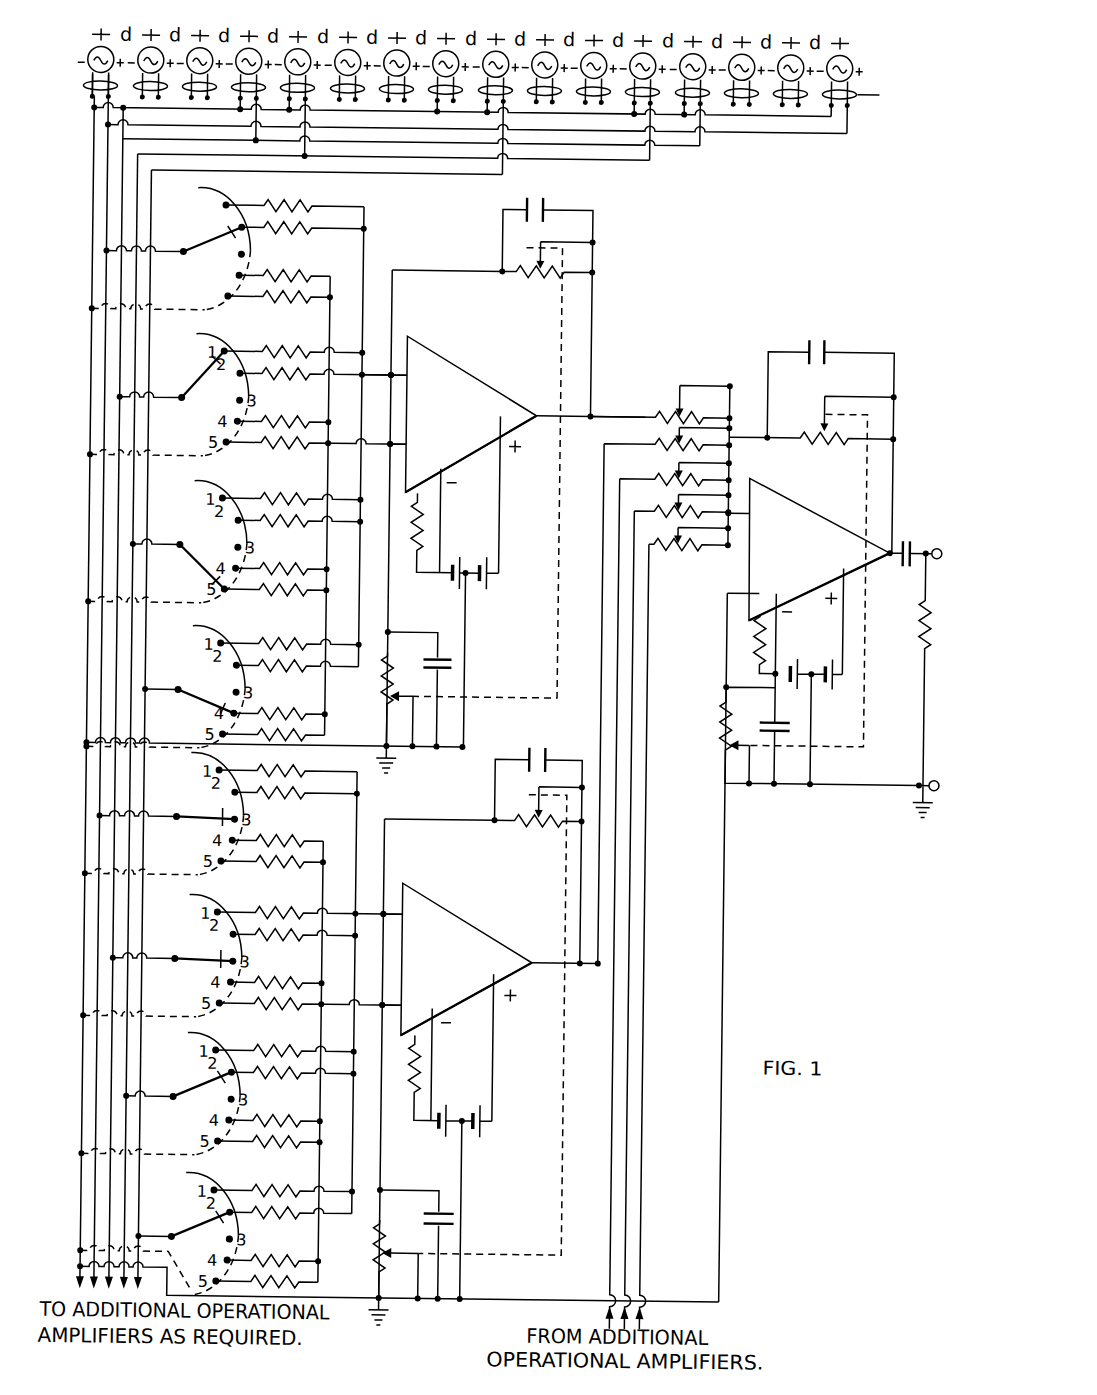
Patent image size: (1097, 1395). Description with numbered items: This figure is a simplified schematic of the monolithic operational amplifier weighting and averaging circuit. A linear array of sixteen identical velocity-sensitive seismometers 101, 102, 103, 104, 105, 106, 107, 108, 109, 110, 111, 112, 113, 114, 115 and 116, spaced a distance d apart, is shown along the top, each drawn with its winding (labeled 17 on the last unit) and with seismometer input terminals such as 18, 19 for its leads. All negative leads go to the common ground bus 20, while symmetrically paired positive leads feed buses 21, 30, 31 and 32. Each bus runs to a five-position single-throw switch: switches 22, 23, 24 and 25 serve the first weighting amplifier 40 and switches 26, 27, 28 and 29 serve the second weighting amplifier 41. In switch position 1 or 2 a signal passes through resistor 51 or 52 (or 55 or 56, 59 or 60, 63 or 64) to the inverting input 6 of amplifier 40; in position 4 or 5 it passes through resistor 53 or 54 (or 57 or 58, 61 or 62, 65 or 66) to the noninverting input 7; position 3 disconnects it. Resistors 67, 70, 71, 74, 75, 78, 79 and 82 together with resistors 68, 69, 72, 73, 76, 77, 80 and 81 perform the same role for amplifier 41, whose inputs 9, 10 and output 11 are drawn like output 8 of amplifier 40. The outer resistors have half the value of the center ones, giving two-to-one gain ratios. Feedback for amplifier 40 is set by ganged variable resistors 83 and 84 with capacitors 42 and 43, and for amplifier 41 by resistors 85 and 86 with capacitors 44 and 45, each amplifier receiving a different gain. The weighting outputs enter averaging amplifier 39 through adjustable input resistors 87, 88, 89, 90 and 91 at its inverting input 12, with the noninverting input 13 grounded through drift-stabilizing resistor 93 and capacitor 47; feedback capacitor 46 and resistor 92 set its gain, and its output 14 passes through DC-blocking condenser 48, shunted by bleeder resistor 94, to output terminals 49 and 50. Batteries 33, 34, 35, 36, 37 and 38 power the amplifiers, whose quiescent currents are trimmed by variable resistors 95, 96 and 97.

The seismometer 101 is at (100, 52).
The seismometer 102 is at (150, 53).
The seismometer 103 is at (199, 53).
The seismometer 104 is at (249, 76).
The seismometer 105 is at (298, 84).
The seismometer 106 is at (347, 55).
The seismometer 107 is at (396, 56).
The seismometer 108 is at (445, 62).
The seismometer 109 is at (495, 93).
The seismometer 110 is at (544, 58).
The seismometer 111 is at (593, 58).
The seismometer 112 is at (643, 87).
The seismometer 113 is at (693, 79).
The seismometer 114 is at (741, 60).
The seismometer 115 is at (790, 61).
The seismometer 116 is at (839, 74).
The source winding 17 is at (880, 95).
The seismometer input terminal 18 is at (83, 88).
The seismometer input terminal 19 is at (103, 88).
The ground bus 20 is at (87, 168).
The input signal bus 21 is at (101, 201).
The input signal bus 30 is at (116, 236).
The input signal bus 31 is at (131, 288).
The input signal bus 32 is at (145, 355).
The five-position single-throw switch 22 is at (172, 240).
The five-position single-throw switch 23 is at (171, 376).
The five-position single-throw switch 24 is at (177, 555).
The five-position single-throw switch 25 is at (188, 690).
The five-position single-throw switch 26 is at (165, 809).
The five-position single-throw switch 27 is at (171, 952).
The five-position single-throw switch 28 is at (177, 1085).
The five-position single-throw switch 29 is at (182, 1225).
The switch position 1 is at (219, 206).
The switch position 2 is at (232, 220).
The switch position 3 is at (248, 254).
The switch position 4 is at (231, 275).
The switch position 5 is at (221, 296).
The inverting input 6 is at (397, 371).
The noninverting input 7 is at (408, 443).
The amplifier output terminal 8 is at (589, 405).
The amplifier input terminal 9 is at (402, 916).
The amplifier input terminal 10 is at (404, 993).
The amplifier output terminal 11 is at (563, 951).
The inverting input 12 is at (755, 513).
The noninverting input 13 is at (752, 581).
The amplifier output terminal 14 is at (884, 541).
The battery 33 is at (453, 561).
The battery 34 is at (482, 561).
The battery 35 is at (448, 1111).
The battery 36 is at (477, 1111).
The battery 37 is at (795, 662).
The battery 38 is at (827, 662).
The averaging operational amplifier 39 is at (818, 576).
The operational amplifier 40 is at (471, 455).
The operational amplifier 41 is at (466, 1002).
The feedback capacitor 42 is at (491, 293).
The feedback capacitor 43 is at (418, 689).
The feedback capacitor 44 is at (483, 843).
The feedback capacitor 45 is at (416, 1244).
The feedback capacitor 46 is at (830, 439).
The capacitor 47 is at (763, 723).
The condenser 48 is at (914, 542).
The output terminal 49 is at (936, 542).
The output terminal 50 is at (929, 786).
The input resistor 51 is at (295, 197).
The input resistor 52 is at (303, 236).
The input resistor 53 is at (286, 267).
The input resistor 54 is at (280, 306).
The input resistor 55 is at (294, 343).
The input resistor 56 is at (323, 382).
The input resistor 57 is at (284, 413).
The input resistor 58 is at (316, 452).
The input resistor 59 is at (292, 490).
The input resistor 60 is at (300, 529).
The input resistor 61 is at (283, 560).
The input resistor 62 is at (276, 599).
The input resistor 63 is at (291, 635).
The input resistor 64 is at (297, 674).
The input resistor 65 is at (281, 705).
The input resistor 66 is at (273, 744).
The input resistor 67 is at (288, 762).
The input resistor 68 is at (297, 801).
The input resistor 69 is at (279, 832).
The input resistor 70 is at (273, 871).
The input resistor 71 is at (309, 904).
The input resistor 72 is at (295, 943).
The input resistor 73 is at (277, 974).
The input resistor 74 is at (310, 1013).
The input resistor 75 is at (286, 1042).
The input resistor 76 is at (293, 1081).
The input resistor 77 is at (276, 1112).
The input resistor 78 is at (269, 1151).
The input resistor 79 is at (284, 1182).
The input resistor 80 is at (290, 1221).
The input resistor 81 is at (274, 1252).
The input resistor 82 is at (280, 1276).
The variable feedback resistor 83 is at (504, 467).
The variable feedback resistor 84 is at (383, 700).
The variable feedback resistor 85 is at (501, 1018).
The variable feedback resistor 86 is at (384, 1259).
The input resistor 87 is at (661, 404).
The input resistor 88 is at (665, 694).
The input resistor 89 is at (668, 894).
The input resistor 90 is at (675, 910).
The input resistor 91 is at (680, 926).
The feedback resistor 92 is at (809, 571).
The drift-stabilizing resistor 93 is at (806, 735).
The bleeder resistor 94 is at (912, 667).
The variable resistor 95 is at (421, 533).
The variable resistor 96 is at (413, 1078).
The variable resistor 97 is at (754, 644).